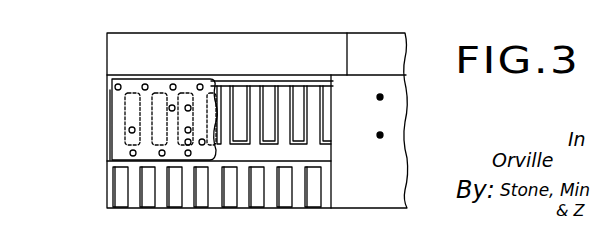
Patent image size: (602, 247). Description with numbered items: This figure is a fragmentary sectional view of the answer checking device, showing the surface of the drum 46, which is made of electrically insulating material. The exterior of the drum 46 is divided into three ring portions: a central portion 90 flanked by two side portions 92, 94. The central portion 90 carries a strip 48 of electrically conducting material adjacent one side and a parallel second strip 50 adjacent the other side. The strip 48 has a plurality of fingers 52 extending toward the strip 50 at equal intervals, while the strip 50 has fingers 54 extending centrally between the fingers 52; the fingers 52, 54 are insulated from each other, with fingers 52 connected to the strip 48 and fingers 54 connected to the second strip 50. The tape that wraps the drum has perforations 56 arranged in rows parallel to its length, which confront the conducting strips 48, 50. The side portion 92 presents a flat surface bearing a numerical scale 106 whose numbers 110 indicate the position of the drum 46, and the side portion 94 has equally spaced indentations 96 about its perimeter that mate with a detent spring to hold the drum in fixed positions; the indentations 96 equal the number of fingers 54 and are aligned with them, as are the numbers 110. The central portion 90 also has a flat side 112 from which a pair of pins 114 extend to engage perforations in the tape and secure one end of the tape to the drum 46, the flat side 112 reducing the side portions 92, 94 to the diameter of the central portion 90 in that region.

The drum 46 is at (393, 44).
The strip 48 is at (317, 152).
The second strip 50 is at (318, 80).
The fingers 52 is at (299, 127).
The fingers 54 is at (286, 106).
The perforations 56 is at (129, 153).
The central portion 90 is at (120, 121).
The side portion 92 is at (107, 62).
The side portion 94 is at (112, 182).
The indentations 96 is at (203, 200).
The numerical scale 106 is at (136, 44).
The numbers 110 is at (182, 26).
The flat side 112 is at (384, 135).
The pins 114 is at (383, 99).